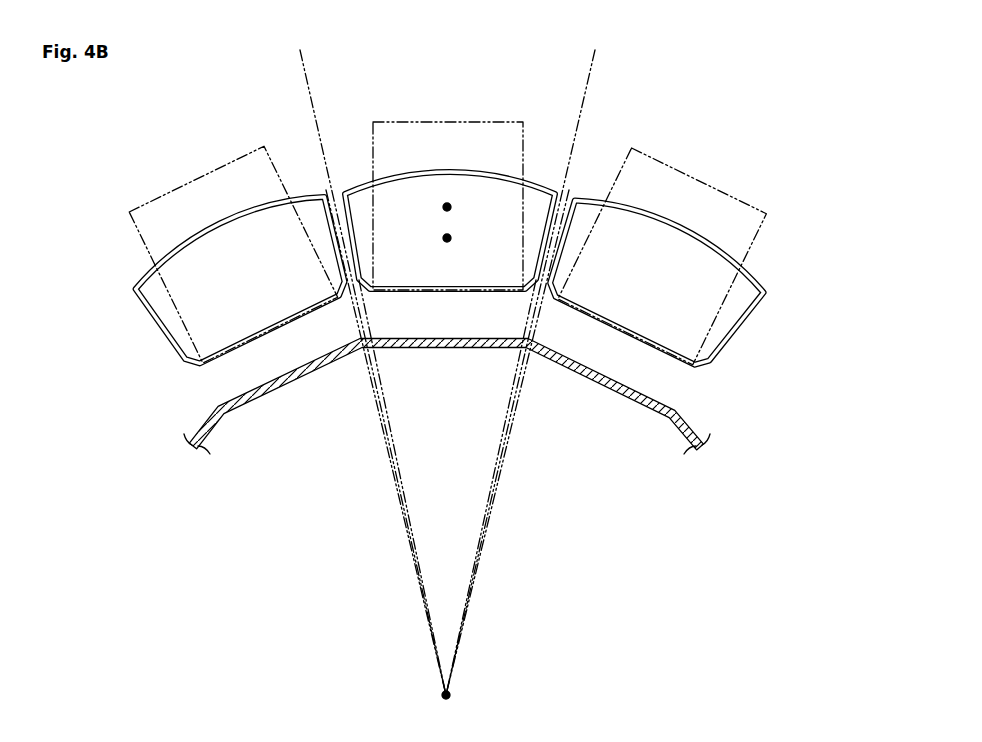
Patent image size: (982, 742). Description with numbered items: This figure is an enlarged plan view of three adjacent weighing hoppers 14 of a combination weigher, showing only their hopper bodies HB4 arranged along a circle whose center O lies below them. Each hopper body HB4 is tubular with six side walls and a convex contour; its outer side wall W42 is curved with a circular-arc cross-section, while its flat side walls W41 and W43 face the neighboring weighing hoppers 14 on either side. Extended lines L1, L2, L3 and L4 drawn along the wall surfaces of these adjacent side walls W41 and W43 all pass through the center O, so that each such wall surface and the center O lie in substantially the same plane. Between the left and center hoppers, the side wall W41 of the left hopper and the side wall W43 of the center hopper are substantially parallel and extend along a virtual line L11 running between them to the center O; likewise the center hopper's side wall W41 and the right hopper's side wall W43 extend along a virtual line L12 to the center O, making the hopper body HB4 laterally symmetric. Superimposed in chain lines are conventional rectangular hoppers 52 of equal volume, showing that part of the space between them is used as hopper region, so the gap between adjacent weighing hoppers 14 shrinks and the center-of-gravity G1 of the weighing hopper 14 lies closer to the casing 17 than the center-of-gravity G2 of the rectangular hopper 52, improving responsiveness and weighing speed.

The weighing hopper 14 is at (412, 168).
The rectangular hopper 52 is at (487, 120).
The casing 17 is at (657, 397).
The hopper body HB4 is at (445, 290).
The center-of-gravity G1 is at (447, 240).
The center-of-gravity G2 is at (447, 205).
The side wall W41 is at (337, 246).
The side wall W42 is at (488, 172).
The side wall W43 is at (345, 247).
The extended line L1 is at (392, 462).
The extended line L2 is at (388, 427).
The extended line L3 is at (497, 487).
The extended line L4 is at (503, 457).
The virtual line L11 is at (312, 102).
The virtual line L12 is at (590, 100).
The center O is at (446, 695).